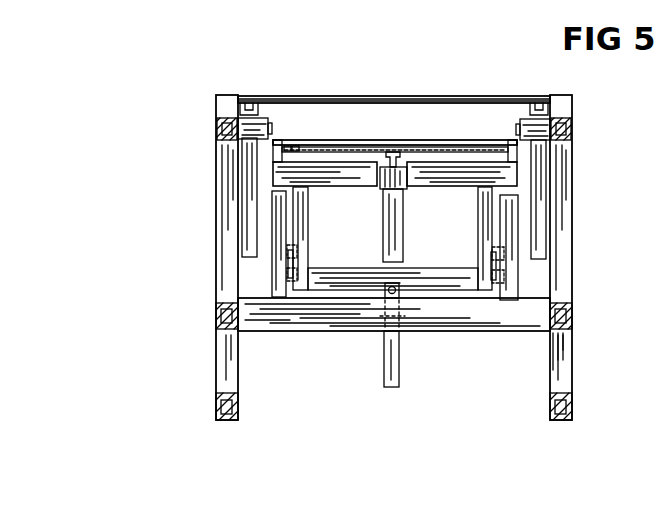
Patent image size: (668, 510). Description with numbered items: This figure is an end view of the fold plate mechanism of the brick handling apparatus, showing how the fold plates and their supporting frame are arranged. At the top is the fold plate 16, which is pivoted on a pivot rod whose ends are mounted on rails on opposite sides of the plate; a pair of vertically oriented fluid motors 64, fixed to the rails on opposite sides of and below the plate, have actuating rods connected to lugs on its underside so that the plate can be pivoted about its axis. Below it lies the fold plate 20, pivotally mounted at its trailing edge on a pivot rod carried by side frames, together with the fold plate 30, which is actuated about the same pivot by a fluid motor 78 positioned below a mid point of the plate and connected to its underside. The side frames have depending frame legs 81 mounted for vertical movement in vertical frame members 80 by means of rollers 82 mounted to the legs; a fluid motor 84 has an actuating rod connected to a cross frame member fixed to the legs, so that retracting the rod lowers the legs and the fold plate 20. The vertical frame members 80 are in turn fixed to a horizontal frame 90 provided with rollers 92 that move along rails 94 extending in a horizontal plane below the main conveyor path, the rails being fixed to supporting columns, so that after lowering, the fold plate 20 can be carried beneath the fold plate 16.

The fold plate 16 is at (372, 96).
The fold plate 20 is at (366, 141).
The fold plate 30 is at (437, 152).
The fluid motors 64 is at (245, 190).
The fluid motor 78 is at (396, 247).
The vertical frame members 80 is at (518, 241).
The frame legs 81 is at (478, 239).
The rollers 82 is at (497, 286).
The fluid motor 84 is at (399, 373).
The horizontal frame 90 is at (480, 331).
The rollers 92 is at (566, 317).
The rails 94 is at (562, 339).